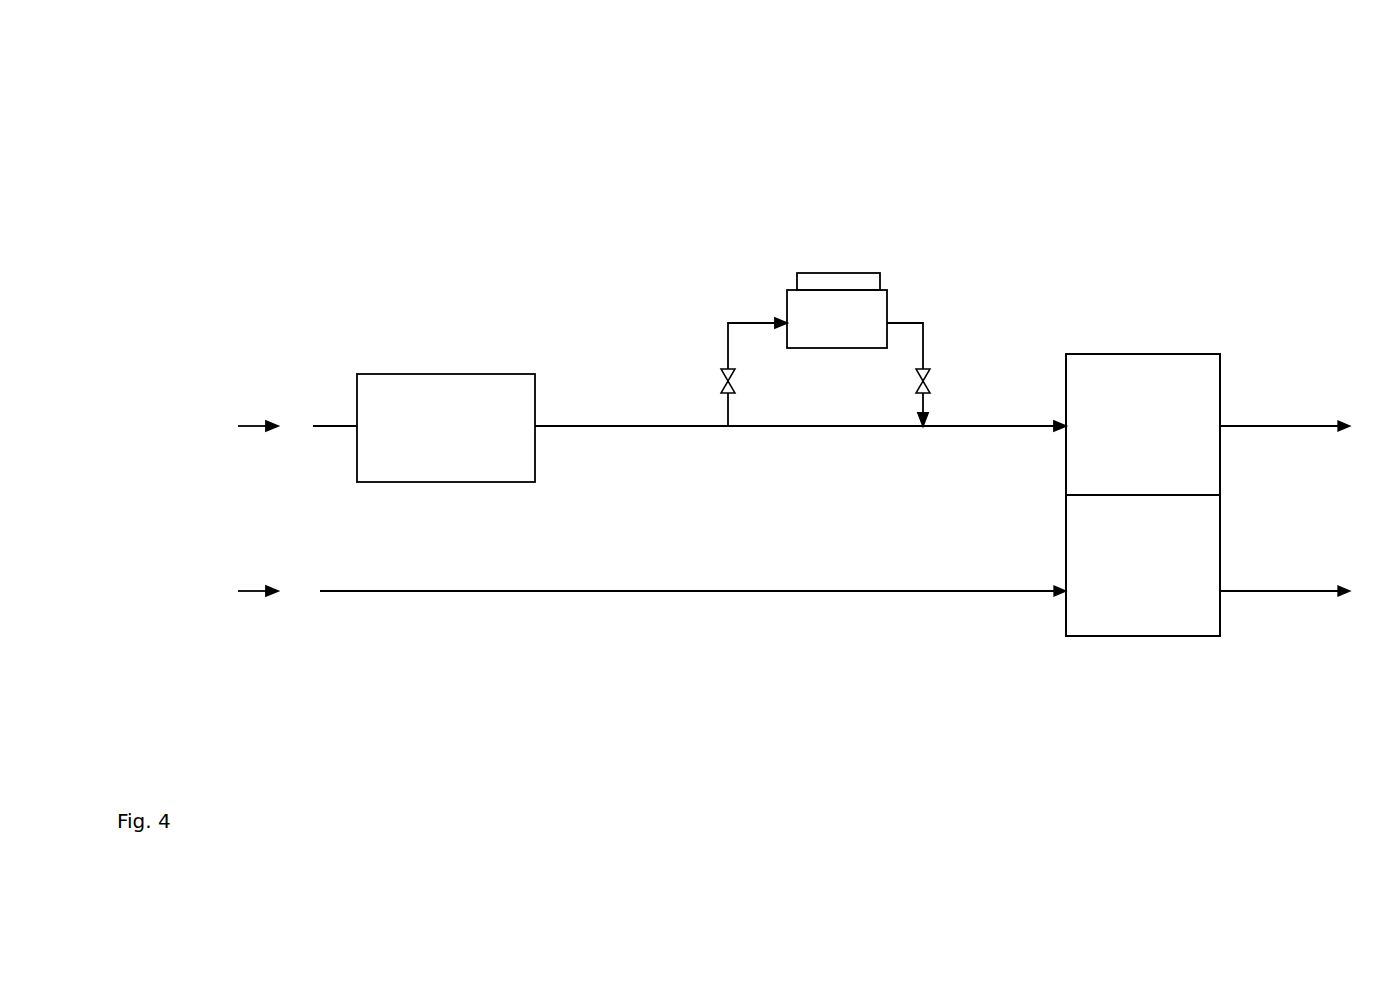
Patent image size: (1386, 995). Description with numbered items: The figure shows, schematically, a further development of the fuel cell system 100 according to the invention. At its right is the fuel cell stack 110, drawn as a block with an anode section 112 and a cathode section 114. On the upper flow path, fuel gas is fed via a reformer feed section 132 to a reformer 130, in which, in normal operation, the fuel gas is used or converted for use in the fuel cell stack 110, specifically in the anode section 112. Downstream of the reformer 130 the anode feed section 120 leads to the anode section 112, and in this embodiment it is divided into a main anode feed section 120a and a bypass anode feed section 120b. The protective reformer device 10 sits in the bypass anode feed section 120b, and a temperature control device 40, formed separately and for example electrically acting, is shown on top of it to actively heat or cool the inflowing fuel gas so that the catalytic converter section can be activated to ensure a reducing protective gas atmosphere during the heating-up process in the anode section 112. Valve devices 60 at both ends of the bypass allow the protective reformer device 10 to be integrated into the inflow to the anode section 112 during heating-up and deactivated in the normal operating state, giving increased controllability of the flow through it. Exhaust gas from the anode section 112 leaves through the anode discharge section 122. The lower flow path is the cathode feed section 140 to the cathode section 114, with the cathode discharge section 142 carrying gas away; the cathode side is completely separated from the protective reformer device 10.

The fuel cell system 100 is at (454, 208).
The protective reformer device 10 is at (786, 238).
The temperature control device 40 is at (858, 272).
The valve device 60 is at (720, 376).
The fuel cell stack 110 is at (1157, 306).
The anode section 112 is at (1161, 441).
The cathode section 114 is at (1161, 586).
The anode feed section 120 is at (1008, 426).
The main anode feed section 120a is at (830, 430).
The bypass anode feed section 120b is at (750, 323).
The anode discharge section 122 is at (1265, 426).
The reformer 130 is at (415, 374).
The reformer feed section 132 is at (335, 426).
The cathode feed section 140 is at (917, 591).
The cathode discharge section 142 is at (1263, 591).